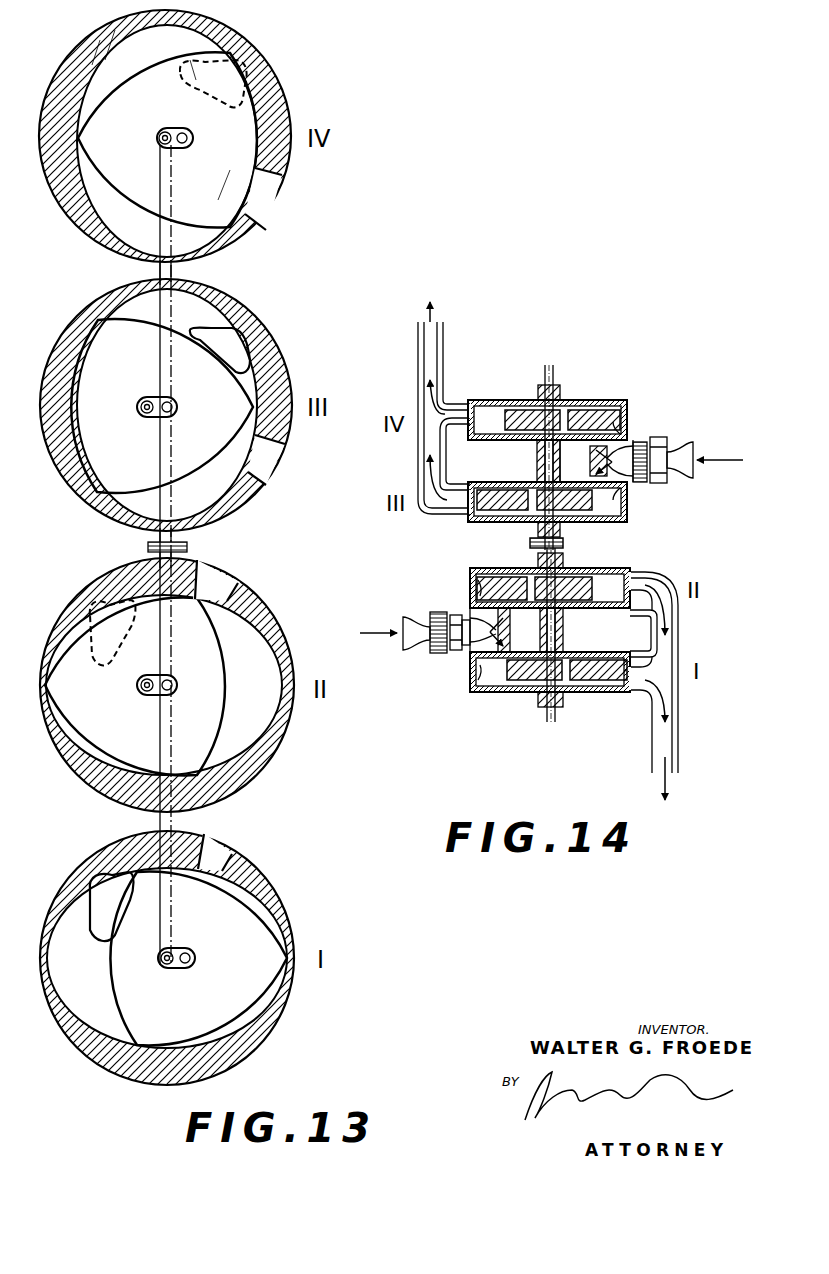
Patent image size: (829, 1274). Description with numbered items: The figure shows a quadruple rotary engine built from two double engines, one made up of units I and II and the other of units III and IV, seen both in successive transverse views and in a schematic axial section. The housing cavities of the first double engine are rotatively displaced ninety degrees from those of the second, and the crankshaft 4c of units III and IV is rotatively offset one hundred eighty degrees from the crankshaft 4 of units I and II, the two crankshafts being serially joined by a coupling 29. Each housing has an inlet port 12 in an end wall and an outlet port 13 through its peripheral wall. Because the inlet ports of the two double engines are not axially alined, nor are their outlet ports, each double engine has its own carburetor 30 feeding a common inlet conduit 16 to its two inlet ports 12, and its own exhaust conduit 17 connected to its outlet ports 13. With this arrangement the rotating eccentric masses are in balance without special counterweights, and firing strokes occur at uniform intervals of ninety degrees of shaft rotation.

In FIG. 13, the crankshaft 4 is at (167, 822).
In FIG. 14, the crankshaft 4 is at (557, 628).
In FIG. 13, the crankshaft 4c is at (167, 273).
In FIG. 14, the crankshaft 4c is at (543, 458).
In FIG. 13, the inlet port 12 is at (252, 72).
In FIG. 14, the inlet port 12 is at (613, 430).
In FIG. 13, the outlet port 13 is at (267, 192).
In FIG. 14, the outlet port 13 is at (476, 404).
In FIG. 14, the common inlet conduit 16 is at (630, 448).
In FIG. 14, the exhaust conduit 17 is at (420, 360).
In FIG. 13, the coupling 29 is at (189, 547).
In FIG. 14, the coupling 29 is at (565, 545).
In FIG. 14, the carburetor 30 is at (660, 482).